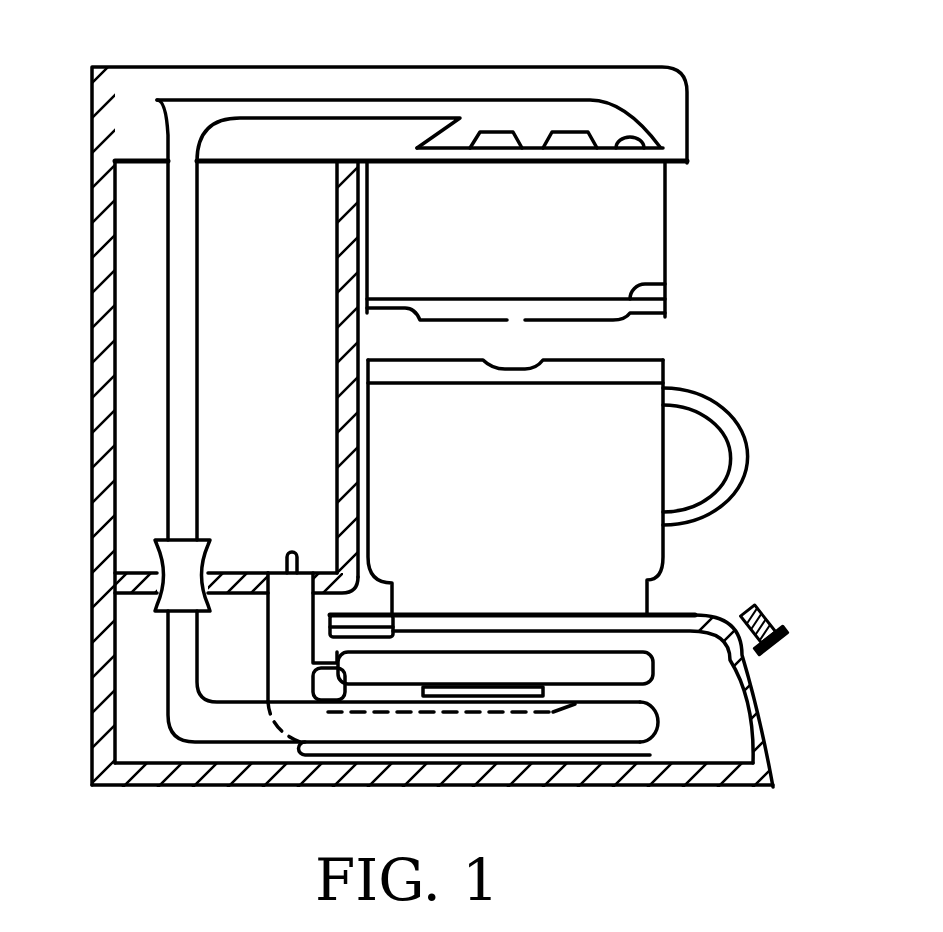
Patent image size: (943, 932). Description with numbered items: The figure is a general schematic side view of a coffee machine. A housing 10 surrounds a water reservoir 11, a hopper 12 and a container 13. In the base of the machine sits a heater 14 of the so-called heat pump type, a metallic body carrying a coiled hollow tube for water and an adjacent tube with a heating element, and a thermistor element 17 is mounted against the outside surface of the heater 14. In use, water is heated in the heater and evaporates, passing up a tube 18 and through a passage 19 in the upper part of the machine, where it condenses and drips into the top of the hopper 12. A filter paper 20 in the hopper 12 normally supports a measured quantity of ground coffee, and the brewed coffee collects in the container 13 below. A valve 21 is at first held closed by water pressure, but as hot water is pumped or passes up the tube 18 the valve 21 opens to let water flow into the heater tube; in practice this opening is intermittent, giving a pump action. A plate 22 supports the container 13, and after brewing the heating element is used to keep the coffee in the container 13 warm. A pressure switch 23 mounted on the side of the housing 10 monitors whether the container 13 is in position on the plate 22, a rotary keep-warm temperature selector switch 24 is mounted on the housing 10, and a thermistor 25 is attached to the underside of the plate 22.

The housing 10 is at (92, 392).
The water reservoir 11 is at (142, 447).
The hopper 12 is at (673, 217).
The container 13 is at (650, 433).
The heater 14 is at (652, 692).
The thermistor element 17 is at (520, 688).
The tube 18 is at (177, 345).
The passage 19 is at (557, 68).
The filter paper 20 is at (673, 290).
The valve 21 is at (283, 540).
The plate 22 is at (687, 613).
The pressure switch 23 is at (337, 427).
The rotary keep-warm temperature selector switch 24 is at (780, 617).
The thermistor 25 is at (363, 623).